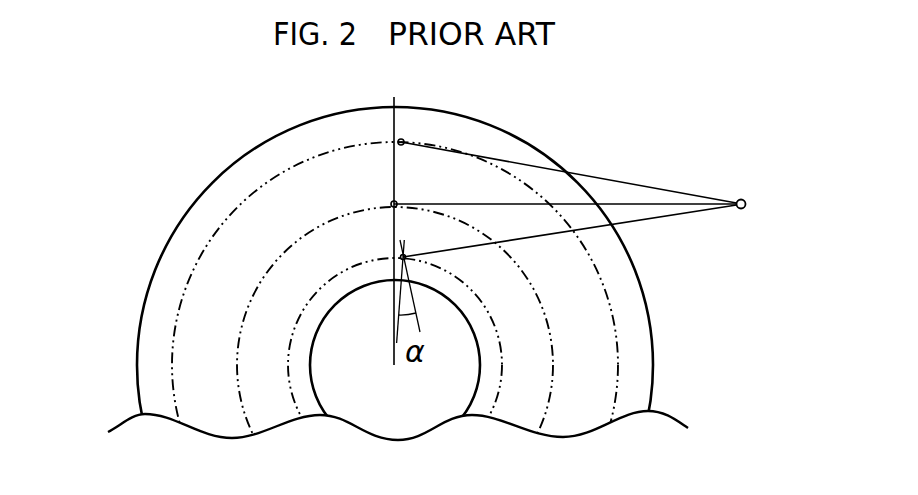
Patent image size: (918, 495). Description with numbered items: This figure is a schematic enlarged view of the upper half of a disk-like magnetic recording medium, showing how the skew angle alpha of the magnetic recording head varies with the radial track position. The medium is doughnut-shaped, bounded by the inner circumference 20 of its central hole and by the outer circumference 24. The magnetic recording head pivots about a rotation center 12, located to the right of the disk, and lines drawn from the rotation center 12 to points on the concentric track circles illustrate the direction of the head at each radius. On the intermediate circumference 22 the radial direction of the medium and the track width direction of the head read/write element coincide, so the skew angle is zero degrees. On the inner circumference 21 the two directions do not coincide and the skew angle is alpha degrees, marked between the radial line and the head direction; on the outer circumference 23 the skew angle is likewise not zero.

The rotation center 12 is at (586, 199).
The inner circumference 20 is at (312, 343).
The inner circumference 21 is at (300, 313).
The intermediate circumference 22 is at (272, 262).
The outer circumference 23 is at (275, 175).
The outer circumference 24 is at (302, 125).